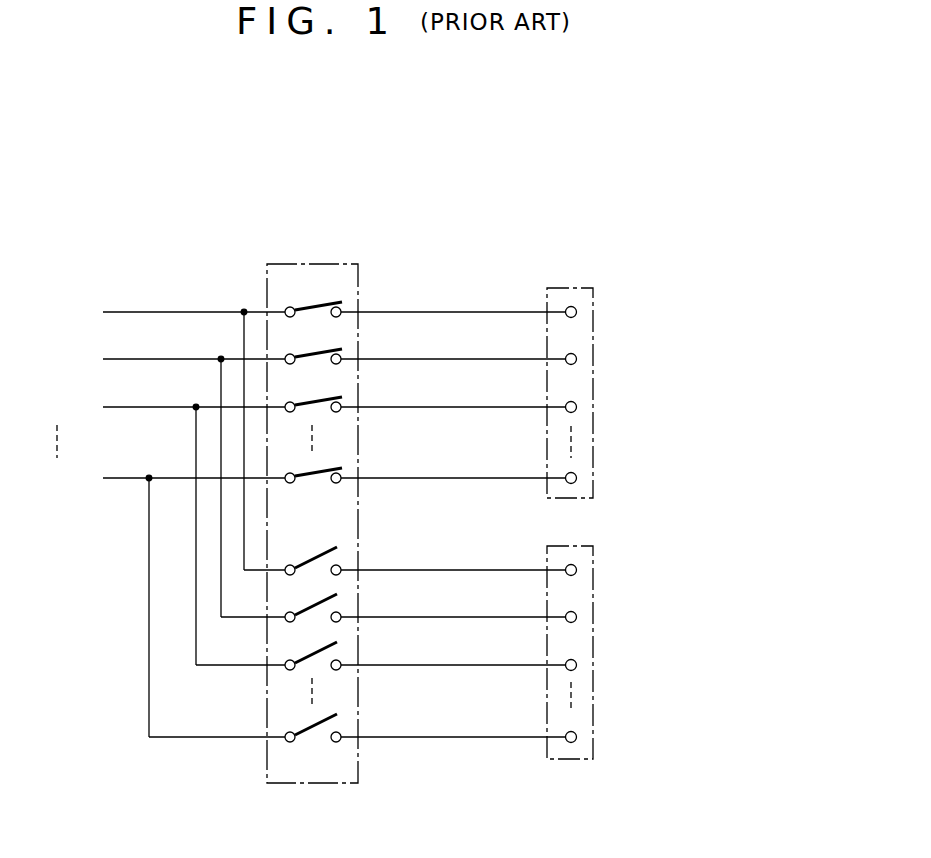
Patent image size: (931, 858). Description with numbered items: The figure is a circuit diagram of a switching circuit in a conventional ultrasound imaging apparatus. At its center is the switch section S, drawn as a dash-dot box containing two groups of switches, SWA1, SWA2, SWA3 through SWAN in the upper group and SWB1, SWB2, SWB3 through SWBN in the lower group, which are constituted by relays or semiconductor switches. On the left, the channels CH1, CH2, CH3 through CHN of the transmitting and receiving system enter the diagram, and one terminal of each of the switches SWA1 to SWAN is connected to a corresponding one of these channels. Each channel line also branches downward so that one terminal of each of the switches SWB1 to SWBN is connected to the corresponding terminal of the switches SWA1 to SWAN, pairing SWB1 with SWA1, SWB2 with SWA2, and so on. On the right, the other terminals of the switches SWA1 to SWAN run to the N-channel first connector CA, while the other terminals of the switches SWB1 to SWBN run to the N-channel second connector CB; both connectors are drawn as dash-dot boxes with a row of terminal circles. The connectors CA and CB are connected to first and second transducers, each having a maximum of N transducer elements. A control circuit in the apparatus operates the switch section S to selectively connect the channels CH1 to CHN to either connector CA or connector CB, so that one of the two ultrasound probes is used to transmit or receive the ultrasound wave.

The switch section S is at (320, 783).
The first connector CA is at (568, 288).
The second connector CB is at (568, 759).
The channel CH1 is at (159, 435).
The channel CH2 is at (159, 482).
The channel CH3 is at (159, 530).
The channel CHN is at (159, 602).
The switch SWA1 is at (328, 302).
The switch SWA2 is at (328, 350).
The switch SWA3 is at (328, 398).
The switch SWAN is at (328, 469).
The switch SWB1 is at (328, 548).
The switch SWB2 is at (328, 597).
The switch SWB3 is at (328, 644).
The switch SWBN is at (328, 711).